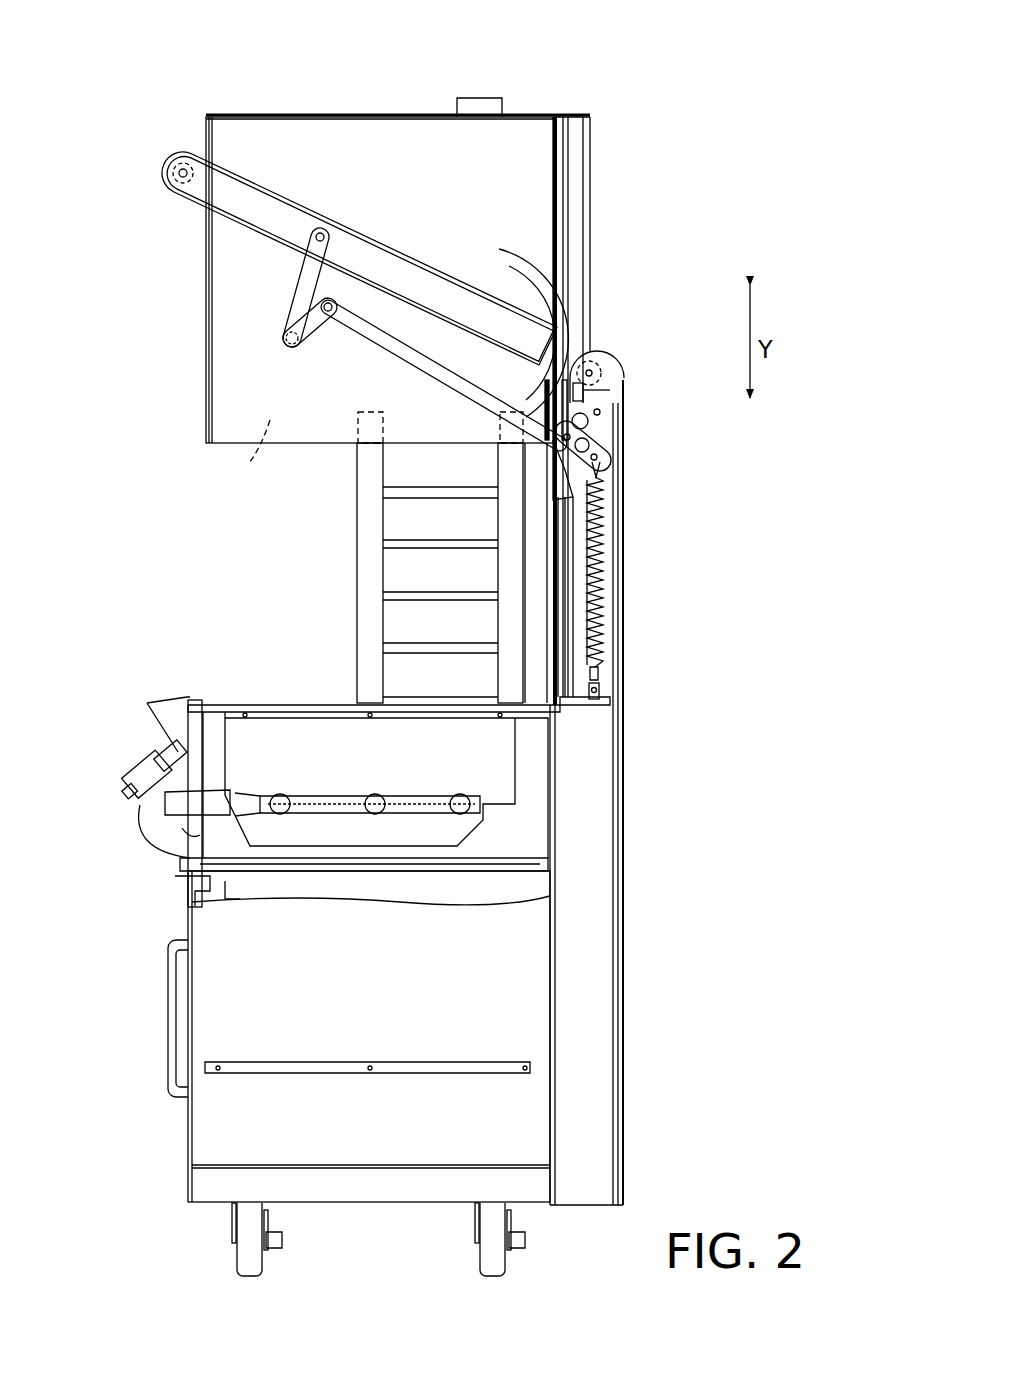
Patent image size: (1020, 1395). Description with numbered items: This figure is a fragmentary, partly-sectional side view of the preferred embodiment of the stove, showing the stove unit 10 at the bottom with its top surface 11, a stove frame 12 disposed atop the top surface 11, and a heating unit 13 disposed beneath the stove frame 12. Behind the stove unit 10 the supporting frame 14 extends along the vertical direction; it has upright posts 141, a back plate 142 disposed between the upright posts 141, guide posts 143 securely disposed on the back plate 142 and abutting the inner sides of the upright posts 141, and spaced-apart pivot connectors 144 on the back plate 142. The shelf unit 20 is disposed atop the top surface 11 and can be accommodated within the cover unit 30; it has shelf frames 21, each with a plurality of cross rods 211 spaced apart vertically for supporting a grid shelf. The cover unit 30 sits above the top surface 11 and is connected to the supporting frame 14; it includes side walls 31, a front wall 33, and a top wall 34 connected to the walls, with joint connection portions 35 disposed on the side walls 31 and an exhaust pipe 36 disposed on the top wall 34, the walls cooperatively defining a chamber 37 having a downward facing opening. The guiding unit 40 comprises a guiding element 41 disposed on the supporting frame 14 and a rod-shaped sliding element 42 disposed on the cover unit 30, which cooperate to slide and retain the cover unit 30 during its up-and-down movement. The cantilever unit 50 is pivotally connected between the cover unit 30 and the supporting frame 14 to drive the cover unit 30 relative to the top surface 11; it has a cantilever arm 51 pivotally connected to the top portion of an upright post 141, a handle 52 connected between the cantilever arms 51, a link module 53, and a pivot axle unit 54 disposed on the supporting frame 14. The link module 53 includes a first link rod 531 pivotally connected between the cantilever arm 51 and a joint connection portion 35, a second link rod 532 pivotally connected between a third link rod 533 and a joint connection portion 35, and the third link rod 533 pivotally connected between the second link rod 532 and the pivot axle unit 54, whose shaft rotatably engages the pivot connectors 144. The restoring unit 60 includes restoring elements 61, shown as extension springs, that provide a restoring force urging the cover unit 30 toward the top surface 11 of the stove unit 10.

The stove unit 10 is at (186, 919).
The top surface 11 is at (222, 720).
The stove frame 12 is at (292, 703).
The heating unit 13 is at (420, 794).
The supporting frame 14 is at (624, 560).
The shelf unit 20 is at (356, 506).
The shelf frame 21 is at (366, 587).
The cross rod 211 is at (420, 600).
The cover unit 30 is at (289, 117).
The side wall 31 is at (389, 117).
The front wall 33 is at (206, 237).
The top wall 34 is at (532, 117).
The joint connection portion 35 is at (282, 332).
The exhaust pipe 36 is at (482, 98).
The chamber 37 is at (250, 462).
The guiding unit 40 is at (594, 126).
The guiding element 41 is at (603, 394).
The sliding element 42 is at (590, 162).
The cantilever unit 50 is at (164, 160).
The cantilever arm 51 is at (462, 295).
The handle 52 is at (172, 175).
The link module 53 is at (460, 364).
The first link rod 531 is at (305, 285).
The second link rod 532 is at (300, 347).
The third link rod 533 is at (560, 332).
The pivot axle unit 54 is at (612, 448).
The restoring unit 60 is at (607, 623).
The restoring element 61 is at (606, 595).
The upright post 141 is at (616, 507).
The back plate 142 is at (592, 656).
The guide post 143 is at (598, 351).
The pivot connector 144 is at (604, 476).